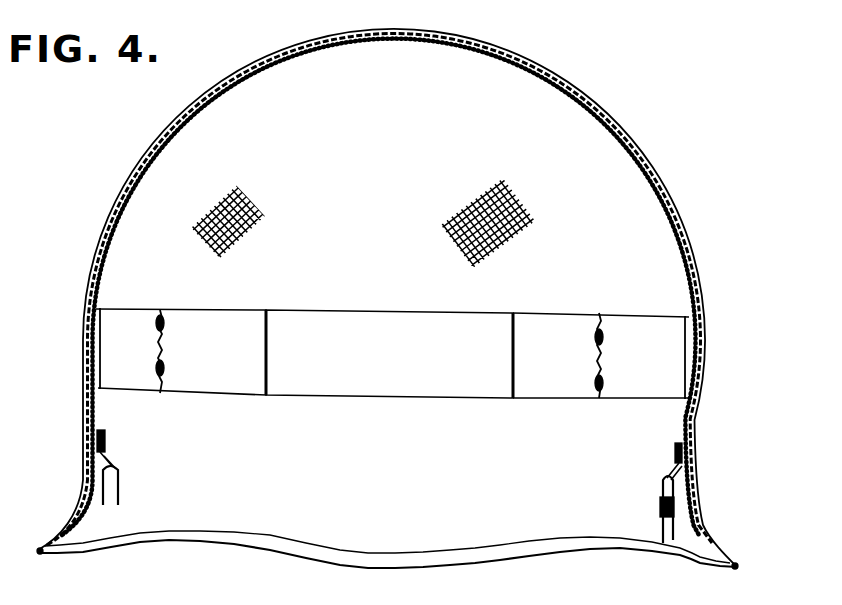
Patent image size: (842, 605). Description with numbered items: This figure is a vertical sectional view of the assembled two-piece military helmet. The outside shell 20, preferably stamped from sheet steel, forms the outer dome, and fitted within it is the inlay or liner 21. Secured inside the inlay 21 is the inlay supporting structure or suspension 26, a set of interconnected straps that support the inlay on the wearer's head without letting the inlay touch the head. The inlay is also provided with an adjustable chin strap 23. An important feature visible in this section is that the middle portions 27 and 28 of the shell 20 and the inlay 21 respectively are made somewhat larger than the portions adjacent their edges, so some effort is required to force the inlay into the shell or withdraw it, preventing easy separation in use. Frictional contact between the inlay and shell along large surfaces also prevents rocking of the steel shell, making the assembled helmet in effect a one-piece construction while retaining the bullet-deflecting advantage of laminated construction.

The outside shell 20 is at (618, 125).
The inlay or liner 21 is at (627, 151).
The adjustable chin strap 23 is at (121, 492).
The inlay supporting structure or suspension 26 is at (210, 394).
The middle portion of the shell 27 is at (85, 320).
The middle portion of the inlay 28 is at (82, 338).